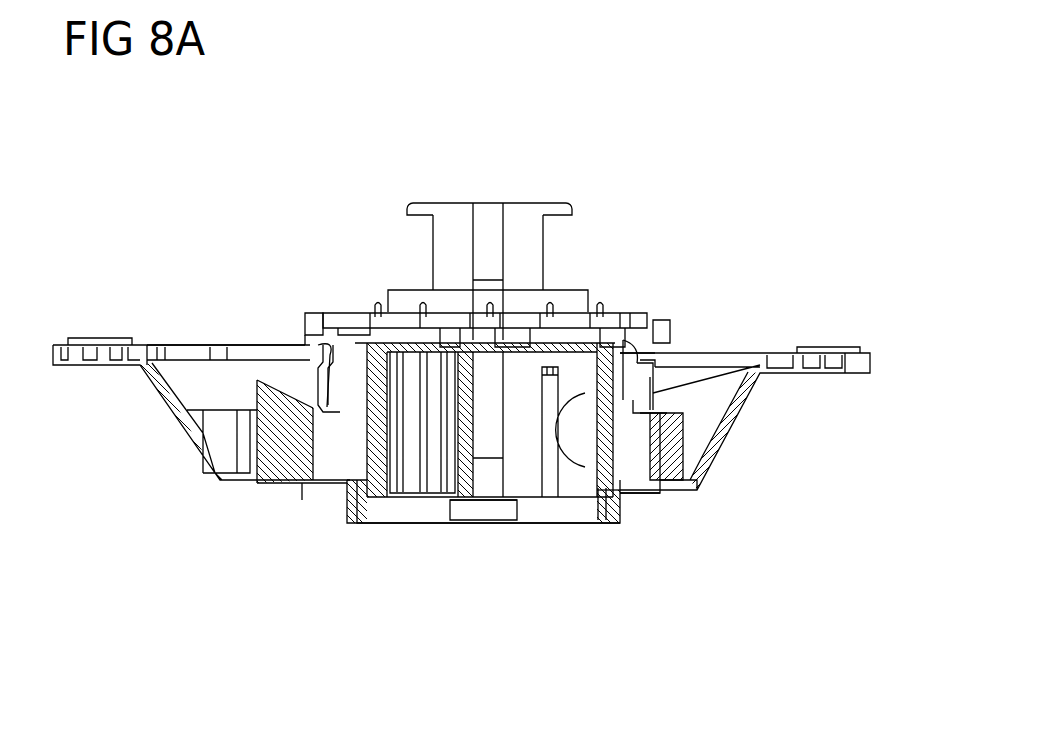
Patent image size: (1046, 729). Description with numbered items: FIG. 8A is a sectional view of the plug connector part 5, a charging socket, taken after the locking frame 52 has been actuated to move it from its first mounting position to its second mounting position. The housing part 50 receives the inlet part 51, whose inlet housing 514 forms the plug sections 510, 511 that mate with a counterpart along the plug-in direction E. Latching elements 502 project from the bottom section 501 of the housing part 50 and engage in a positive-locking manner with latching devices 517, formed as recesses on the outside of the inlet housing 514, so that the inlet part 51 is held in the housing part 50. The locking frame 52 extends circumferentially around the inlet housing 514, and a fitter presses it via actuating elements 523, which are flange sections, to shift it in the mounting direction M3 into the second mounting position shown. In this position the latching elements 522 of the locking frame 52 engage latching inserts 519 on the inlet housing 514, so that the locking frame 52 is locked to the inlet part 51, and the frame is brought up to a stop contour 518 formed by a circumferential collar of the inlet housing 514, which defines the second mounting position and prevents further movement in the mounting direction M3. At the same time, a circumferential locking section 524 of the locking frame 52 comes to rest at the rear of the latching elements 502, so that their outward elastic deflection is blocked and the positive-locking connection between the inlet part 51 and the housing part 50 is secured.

The plug connector part 5 is at (728, 171).
The housing part 50 is at (737, 428).
The inlet part 51 is at (352, 520).
The locking frame 52 is at (445, 265).
The bottom section 501 is at (302, 500).
The latching elements 502 is at (320, 360).
The plug section 510 is at (493, 548).
The plug section 511 is at (499, 572).
The inlet housing 514 is at (650, 357).
The latching devices 517 is at (362, 500).
The stop contour 518 is at (618, 365).
The latching inserts 519 is at (327, 330).
The latching elements 522 is at (325, 407).
The actuating elements 523 is at (548, 202).
The locking section 524 is at (300, 462).
The mounting direction M3 is at (232, 133).
The plug-in direction E is at (688, 398).